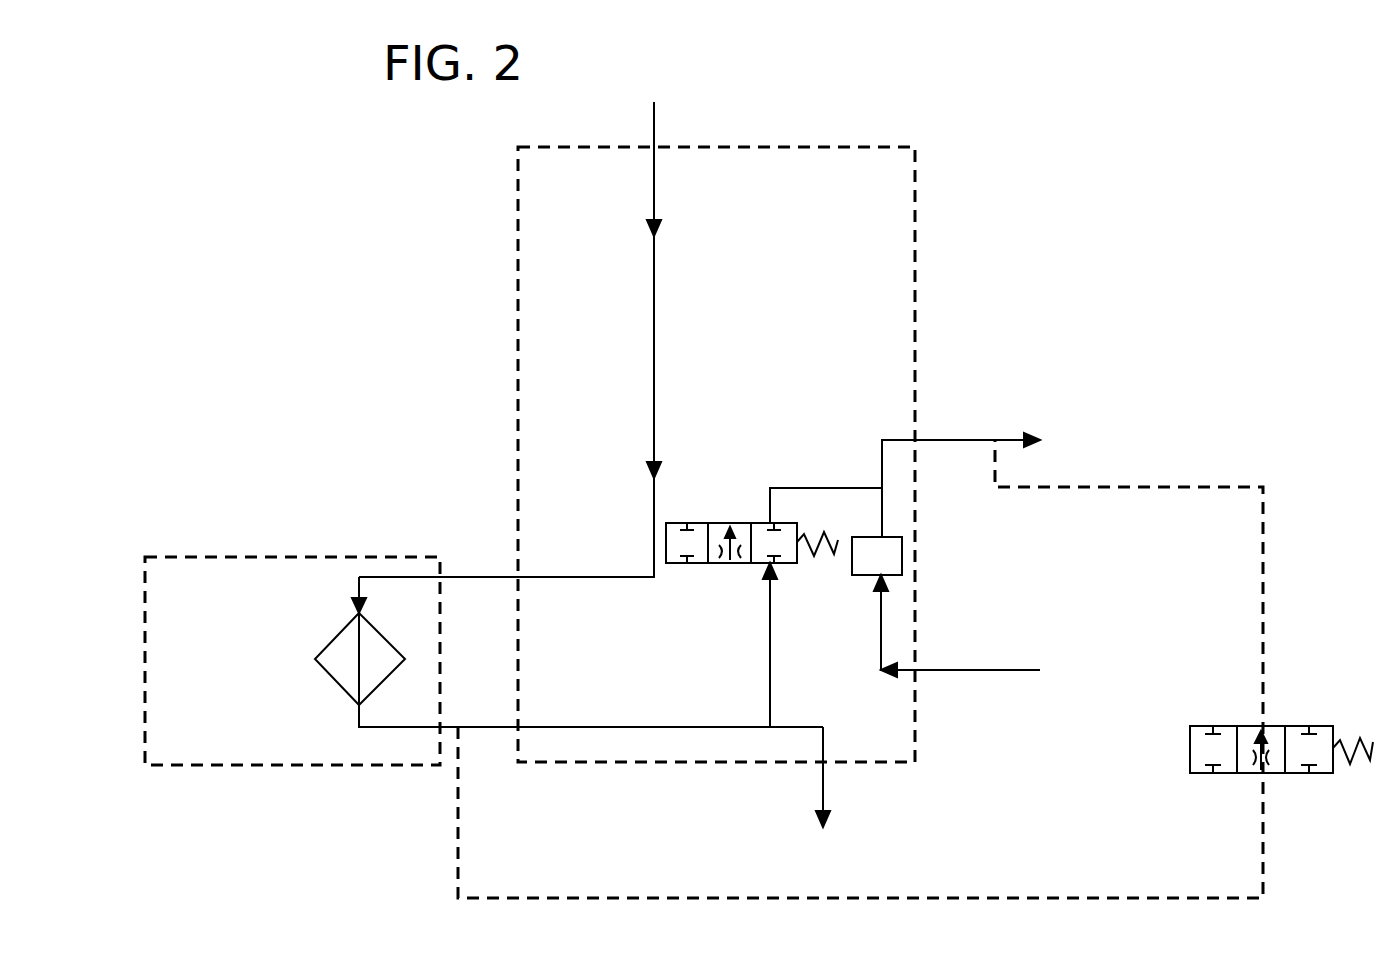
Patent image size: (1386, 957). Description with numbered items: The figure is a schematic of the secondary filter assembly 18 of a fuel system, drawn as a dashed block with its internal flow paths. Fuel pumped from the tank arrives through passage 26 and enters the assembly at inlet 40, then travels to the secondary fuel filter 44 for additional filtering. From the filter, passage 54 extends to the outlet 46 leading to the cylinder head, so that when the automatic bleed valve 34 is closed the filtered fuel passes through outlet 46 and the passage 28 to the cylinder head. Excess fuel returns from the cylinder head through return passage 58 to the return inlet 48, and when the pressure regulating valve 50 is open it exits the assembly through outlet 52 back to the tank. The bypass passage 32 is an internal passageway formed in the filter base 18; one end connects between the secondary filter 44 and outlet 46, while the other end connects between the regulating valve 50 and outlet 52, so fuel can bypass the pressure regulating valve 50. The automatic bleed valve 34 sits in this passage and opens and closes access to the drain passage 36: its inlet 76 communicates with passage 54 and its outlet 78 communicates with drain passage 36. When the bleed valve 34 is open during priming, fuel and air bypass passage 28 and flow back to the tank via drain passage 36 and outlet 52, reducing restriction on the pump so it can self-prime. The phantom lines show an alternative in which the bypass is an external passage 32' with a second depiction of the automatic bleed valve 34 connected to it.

The secondary filter assembly 18 is at (916, 190).
The passage 26 is at (655, 113).
The inlet 40 is at (655, 147).
The secondary fuel filter 44 is at (145, 668).
The passage 54 is at (622, 726).
The outlet 46 is at (823, 765).
The passage 28 is at (828, 790).
The automatic bleed valve 34 is at (770, 523).
The outlet 78 is at (772, 522).
The inlet 76 is at (766, 566).
The bypass passage 32 is at (790, 573).
The pressure regulating valve 50 is at (905, 540).
The outlet 52 is at (917, 440).
The drain passage 36 is at (975, 440).
The return inlet 48 is at (918, 670).
The return passage 58 is at (1000, 670).
The external passage 32' is at (860, 669).